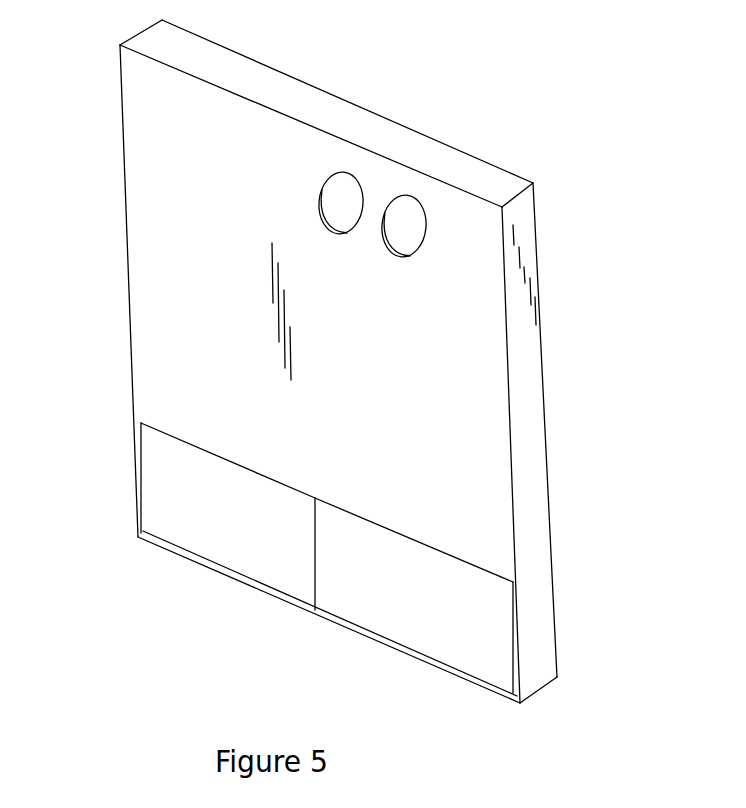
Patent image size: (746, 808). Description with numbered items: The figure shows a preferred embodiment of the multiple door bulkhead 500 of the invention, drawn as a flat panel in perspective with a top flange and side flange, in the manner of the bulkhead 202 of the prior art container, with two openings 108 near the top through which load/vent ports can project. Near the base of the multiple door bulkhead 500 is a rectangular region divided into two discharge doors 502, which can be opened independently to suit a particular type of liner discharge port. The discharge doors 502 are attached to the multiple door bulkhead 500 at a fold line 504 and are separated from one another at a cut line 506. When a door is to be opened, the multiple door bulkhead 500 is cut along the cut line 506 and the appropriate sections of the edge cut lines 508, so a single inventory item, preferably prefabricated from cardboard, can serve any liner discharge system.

The multiple door bulkhead 500 is at (118, 573).
The bulkhead 202 is at (188, 118).
The mounting holes 108 is at (338, 193).
The discharge doors 502 is at (327, 549).
The fold line 504 is at (417, 650).
The cut line 506 is at (315, 575).
The edge cut lines 508 is at (143, 510).